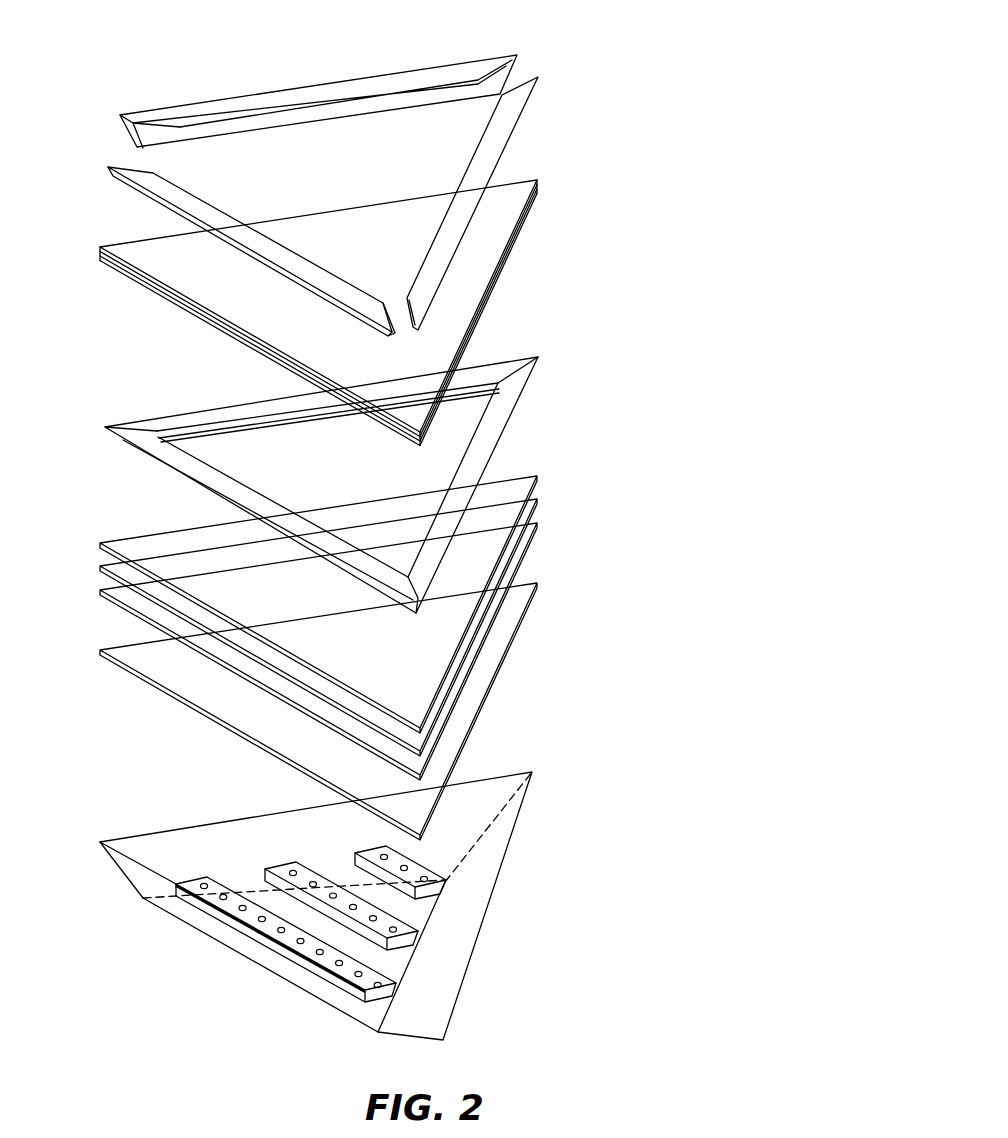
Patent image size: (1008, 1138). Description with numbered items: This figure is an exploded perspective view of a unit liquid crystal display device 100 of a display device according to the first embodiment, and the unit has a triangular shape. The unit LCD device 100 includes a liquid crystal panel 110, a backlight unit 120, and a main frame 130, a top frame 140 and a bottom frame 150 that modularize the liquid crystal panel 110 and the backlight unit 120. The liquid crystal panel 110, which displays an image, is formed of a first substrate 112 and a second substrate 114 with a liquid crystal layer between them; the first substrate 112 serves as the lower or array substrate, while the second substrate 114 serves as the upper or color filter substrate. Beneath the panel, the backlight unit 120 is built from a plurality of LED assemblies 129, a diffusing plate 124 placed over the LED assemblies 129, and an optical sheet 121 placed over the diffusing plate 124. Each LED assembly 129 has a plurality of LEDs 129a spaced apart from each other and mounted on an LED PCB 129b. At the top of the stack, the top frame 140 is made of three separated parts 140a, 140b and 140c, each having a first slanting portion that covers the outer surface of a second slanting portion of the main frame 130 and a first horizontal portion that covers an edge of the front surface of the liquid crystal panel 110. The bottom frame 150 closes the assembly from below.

The unit liquid crystal display device 100 is at (414, 520).
The liquid crystal panel 110 is at (659, 311).
The first substrate 112 is at (500, 280).
The second substrate 114 is at (487, 255).
The backlight unit 120 is at (669, 893).
The optical sheet 121 is at (561, 522).
The diffusing plate 124 is at (512, 607).
The LED assembly 129 is at (611, 916).
The LED 129a is at (423, 877).
The LED PCB 129b is at (433, 887).
The main frame 130 is at (502, 414).
The top frame 140 is at (661, 175).
The separated part 140a is at (515, 105).
The separated part 140b is at (484, 55).
The separated part 140c is at (333, 283).
The bottom frame 150 is at (447, 955).